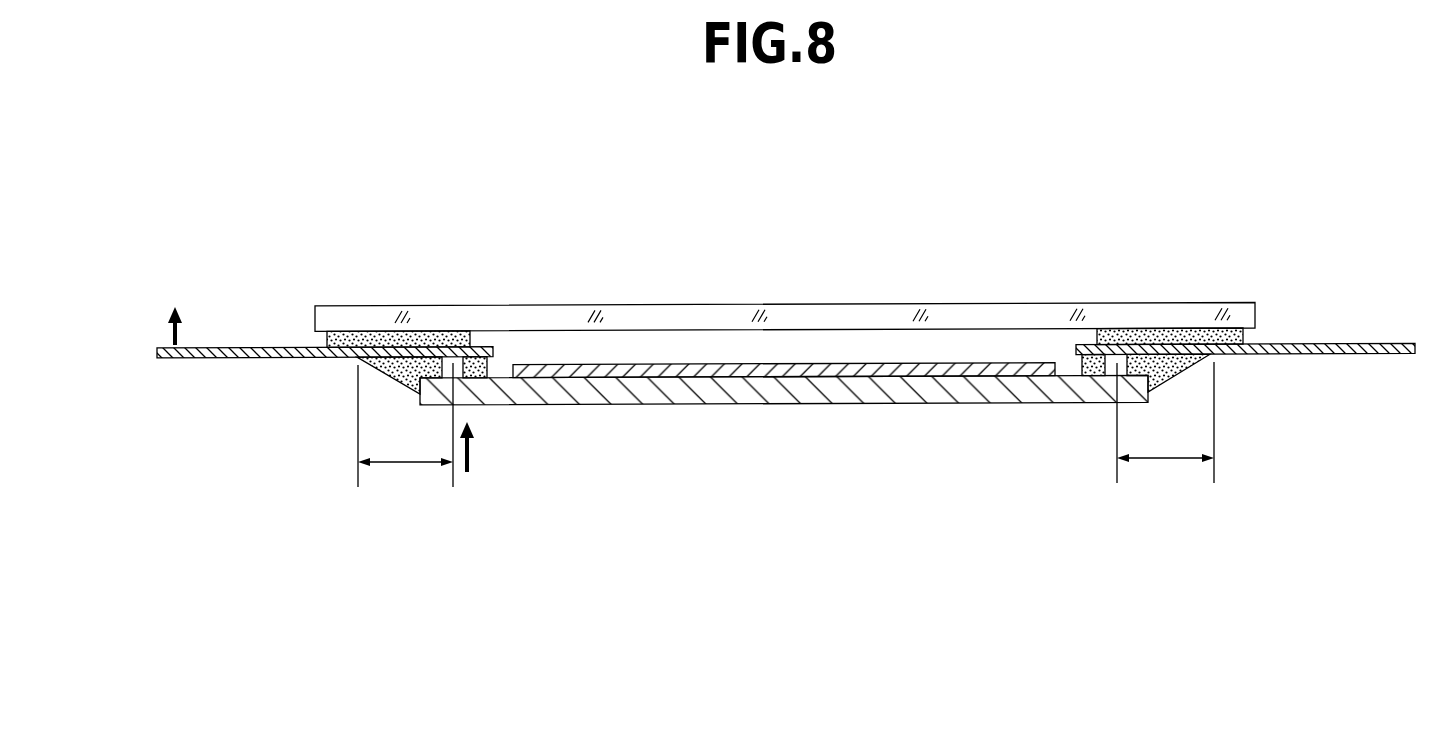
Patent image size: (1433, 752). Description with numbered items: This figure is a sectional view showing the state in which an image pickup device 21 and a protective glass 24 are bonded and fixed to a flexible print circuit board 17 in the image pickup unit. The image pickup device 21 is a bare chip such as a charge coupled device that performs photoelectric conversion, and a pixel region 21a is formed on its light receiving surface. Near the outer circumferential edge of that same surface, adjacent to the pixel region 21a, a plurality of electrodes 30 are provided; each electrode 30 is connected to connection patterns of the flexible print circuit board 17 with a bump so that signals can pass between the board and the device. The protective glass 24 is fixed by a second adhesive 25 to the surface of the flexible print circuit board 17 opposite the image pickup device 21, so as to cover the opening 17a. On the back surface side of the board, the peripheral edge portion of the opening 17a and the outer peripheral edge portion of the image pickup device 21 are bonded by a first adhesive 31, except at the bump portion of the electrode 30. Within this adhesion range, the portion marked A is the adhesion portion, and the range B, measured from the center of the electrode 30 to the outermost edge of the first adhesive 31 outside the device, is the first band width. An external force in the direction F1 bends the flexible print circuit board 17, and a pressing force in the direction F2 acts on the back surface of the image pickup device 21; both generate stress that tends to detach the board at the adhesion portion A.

The flexible print circuit board 17 is at (245, 347).
The opening 17a is at (800, 348).
The image pickup device 21 is at (715, 392).
The pixel region 21a is at (887, 353).
The protective glass 24 is at (521, 318).
The second adhesive 25 is at (372, 333).
The electrode 30 is at (485, 373).
The first adhesive 31 is at (418, 362).
The adhesion portion A is at (374, 389).
The first band width B is at (786, 428).
The external force direction F1 is at (168, 335).
The pressing force direction F2 is at (473, 457).